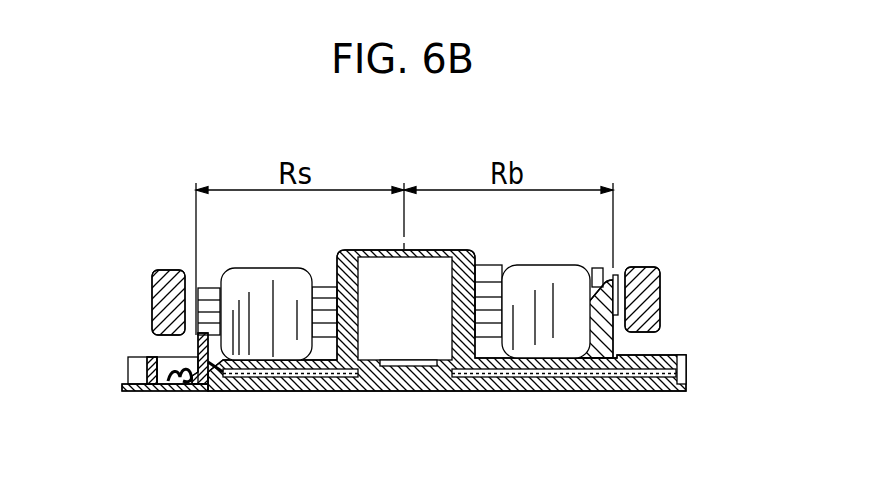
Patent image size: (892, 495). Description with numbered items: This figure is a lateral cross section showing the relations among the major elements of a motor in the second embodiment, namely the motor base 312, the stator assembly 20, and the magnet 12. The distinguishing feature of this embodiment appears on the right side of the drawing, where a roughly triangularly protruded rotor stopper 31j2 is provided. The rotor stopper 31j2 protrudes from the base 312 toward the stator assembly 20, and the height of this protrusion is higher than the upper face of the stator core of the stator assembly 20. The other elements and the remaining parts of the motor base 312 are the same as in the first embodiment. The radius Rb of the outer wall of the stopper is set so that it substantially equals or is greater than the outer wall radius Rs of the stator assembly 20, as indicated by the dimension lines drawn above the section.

The magnet 12 is at (648, 267).
The stator assembly 20 is at (272, 313).
The motor base 312 is at (461, 378).
The rotor stopper 31j2 is at (613, 278).